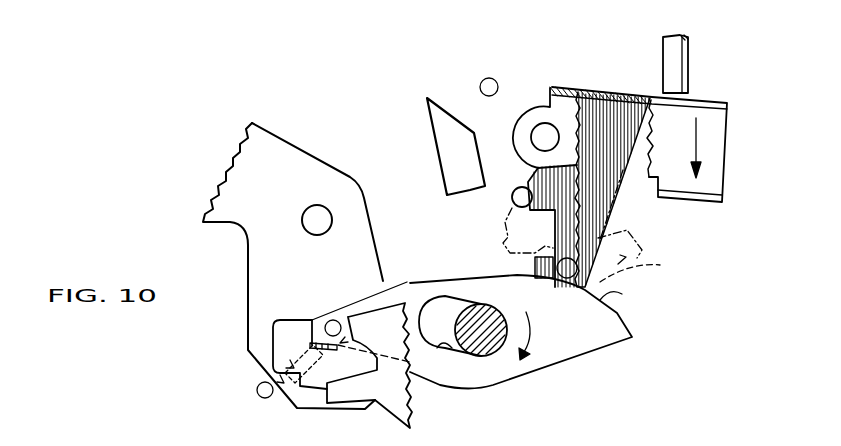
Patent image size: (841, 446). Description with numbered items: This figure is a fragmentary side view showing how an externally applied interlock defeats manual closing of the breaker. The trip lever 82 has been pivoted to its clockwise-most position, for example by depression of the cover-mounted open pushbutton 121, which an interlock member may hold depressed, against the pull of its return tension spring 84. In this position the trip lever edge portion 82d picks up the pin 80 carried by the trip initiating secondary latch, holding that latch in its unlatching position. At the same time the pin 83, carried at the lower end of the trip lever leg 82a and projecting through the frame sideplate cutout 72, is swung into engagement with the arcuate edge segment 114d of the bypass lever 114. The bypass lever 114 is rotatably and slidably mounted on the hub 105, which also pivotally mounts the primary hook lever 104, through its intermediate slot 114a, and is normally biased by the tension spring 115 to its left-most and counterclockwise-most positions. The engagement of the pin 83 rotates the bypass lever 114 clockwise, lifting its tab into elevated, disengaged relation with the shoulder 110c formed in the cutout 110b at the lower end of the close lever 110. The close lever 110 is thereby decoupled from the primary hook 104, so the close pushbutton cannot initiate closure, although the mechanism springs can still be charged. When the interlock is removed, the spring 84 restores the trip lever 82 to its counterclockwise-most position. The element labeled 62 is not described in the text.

The pivot pin 62 is at (540, 126).
The cutout 72 is at (660, 265).
The pin 80 is at (511, 201).
The trip lever 82 is at (717, 148).
The trip lever leg 82a is at (600, 190).
The trip lever edge portion 82d is at (537, 177).
The pin 83 is at (577, 275).
The tension spring 84 is at (620, 215).
The primary hook lever 104 is at (396, 290).
The hub 105 is at (480, 313).
The close lever 110 is at (285, 197).
The cutout 110b is at (289, 319).
The shoulder 110c is at (280, 390).
The bypass lever 114 is at (582, 347).
The intermediate slot 114a is at (450, 350).
The arcuate edge segment 114d is at (622, 294).
The tension spring 115 is at (289, 361).
The open pushbutton 121 is at (690, 58).